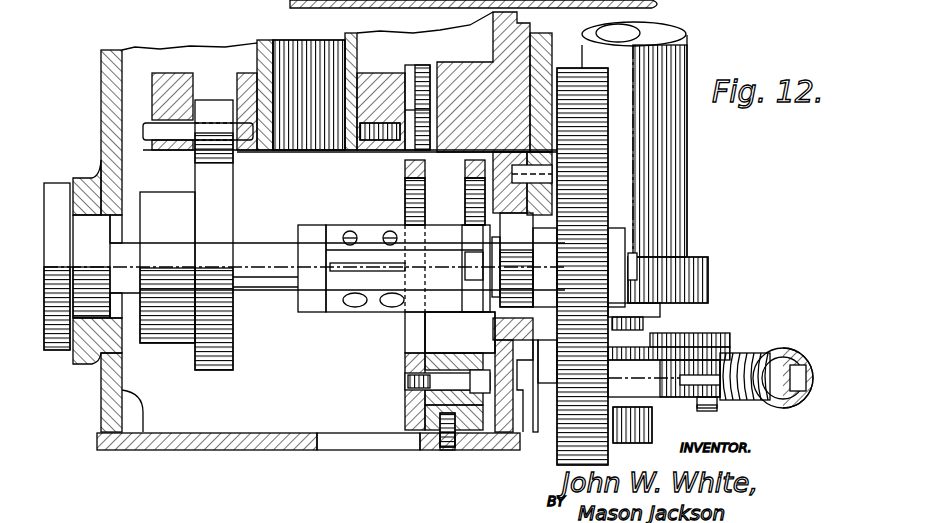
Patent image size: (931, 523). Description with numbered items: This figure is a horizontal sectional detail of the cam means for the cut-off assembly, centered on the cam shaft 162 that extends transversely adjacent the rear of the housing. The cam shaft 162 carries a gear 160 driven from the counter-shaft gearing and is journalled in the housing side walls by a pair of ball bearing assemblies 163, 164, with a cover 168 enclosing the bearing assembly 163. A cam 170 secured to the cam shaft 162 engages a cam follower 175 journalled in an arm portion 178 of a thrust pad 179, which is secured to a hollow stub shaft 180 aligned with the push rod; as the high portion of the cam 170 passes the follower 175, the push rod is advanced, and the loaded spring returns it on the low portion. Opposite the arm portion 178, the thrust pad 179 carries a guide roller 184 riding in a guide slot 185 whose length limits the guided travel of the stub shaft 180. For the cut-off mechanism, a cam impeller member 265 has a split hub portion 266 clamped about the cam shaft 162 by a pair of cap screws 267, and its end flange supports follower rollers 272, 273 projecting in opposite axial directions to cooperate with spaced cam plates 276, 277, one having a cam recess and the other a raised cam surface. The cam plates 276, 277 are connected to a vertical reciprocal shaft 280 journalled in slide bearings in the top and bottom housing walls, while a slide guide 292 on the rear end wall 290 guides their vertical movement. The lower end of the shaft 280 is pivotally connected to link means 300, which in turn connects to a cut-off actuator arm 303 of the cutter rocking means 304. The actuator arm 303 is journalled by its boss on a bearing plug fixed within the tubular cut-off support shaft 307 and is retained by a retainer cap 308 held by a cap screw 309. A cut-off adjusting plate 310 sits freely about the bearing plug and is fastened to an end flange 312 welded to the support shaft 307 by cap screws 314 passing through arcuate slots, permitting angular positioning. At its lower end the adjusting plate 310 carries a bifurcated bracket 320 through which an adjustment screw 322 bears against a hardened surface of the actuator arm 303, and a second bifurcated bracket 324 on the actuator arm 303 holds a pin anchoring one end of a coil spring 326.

The gear 160 is at (605, 190).
The cam shaft 162 is at (265, 290).
The ball bearing assembly 163 is at (100, 310).
The ball bearing assembly 164 is at (522, 253).
The cover 168 is at (53, 185).
The cam 170 is at (202, 362).
The cam follower 175 is at (210, 100).
The arm portion 178 is at (150, 82).
The thrust pad 179 is at (360, 78).
The hollow stub shaft 180 is at (263, 43).
The guide roller 184 is at (412, 118).
The guide slot 185 is at (428, 68).
The cam impeller member 265 is at (333, 224).
The split hub portion 266 is at (368, 230).
The cap screws 267 is at (390, 308).
The follower roller 272 is at (470, 248).
The follower roller 273 is at (412, 283).
The cam plate 276 is at (465, 180).
The cam plate 277 is at (402, 166).
The vertical reciprocal shaft 280 is at (405, 405).
The rear end wall 290 is at (273, 447).
The slide guide 292 is at (462, 450).
The link means 300 is at (472, 356).
The cut-off actuator arm 303 is at (537, 395).
The cutter rocking means 304 is at (715, 428).
The tubular cut-off support shaft 307 is at (678, 228).
The retainer cap 308 is at (704, 410).
The cap screw 309 is at (660, 448).
The cut-off adjusting plate 310 is at (730, 355).
The end flange 312 is at (723, 333).
The cap screws 314 is at (640, 318).
The bifurcated bracket 320 is at (803, 352).
The adjustment screw 322 is at (805, 398).
The bifurcated bracket 324 is at (683, 372).
The coil spring 326 is at (765, 346).